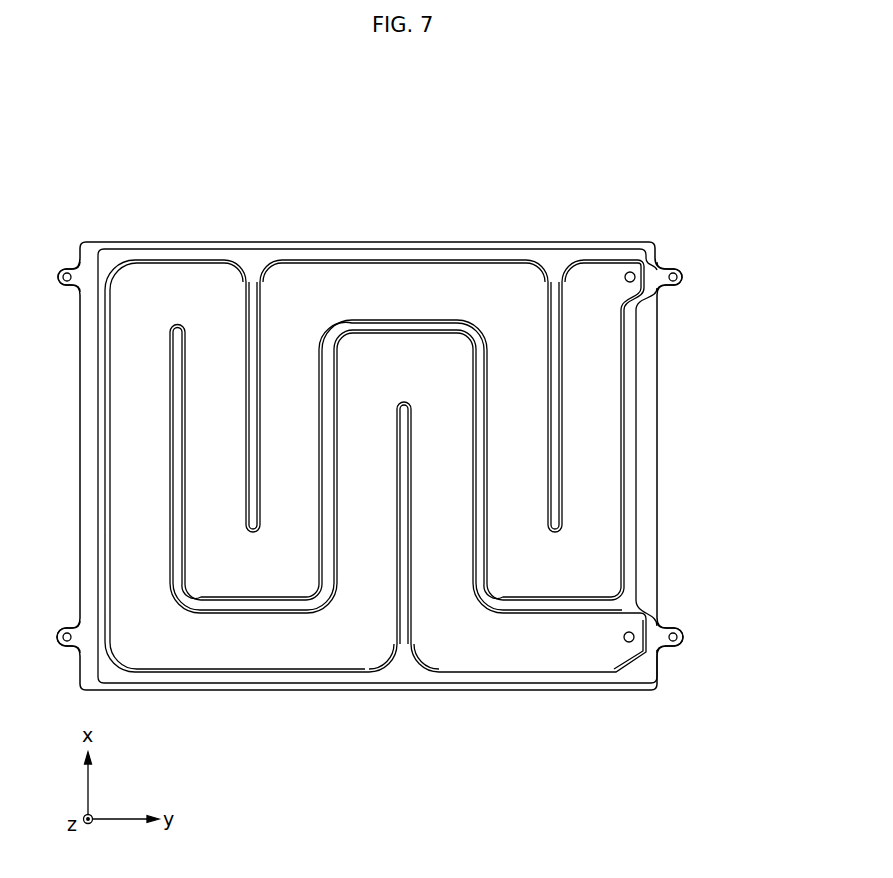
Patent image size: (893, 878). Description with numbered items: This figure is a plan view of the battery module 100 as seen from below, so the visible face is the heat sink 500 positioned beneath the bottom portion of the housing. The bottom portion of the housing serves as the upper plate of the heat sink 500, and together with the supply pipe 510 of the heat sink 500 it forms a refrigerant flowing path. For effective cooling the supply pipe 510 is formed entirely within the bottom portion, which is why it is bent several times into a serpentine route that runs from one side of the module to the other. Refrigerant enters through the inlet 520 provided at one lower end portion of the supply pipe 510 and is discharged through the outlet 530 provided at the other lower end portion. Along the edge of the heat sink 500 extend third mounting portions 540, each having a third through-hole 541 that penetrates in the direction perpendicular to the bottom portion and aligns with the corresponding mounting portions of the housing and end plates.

The battery module 100 is at (357, 108).
The heat sink 500 is at (255, 263).
The supply pipe 510 is at (392, 288).
The inlet 520 is at (630, 271).
The outlet 530 is at (623, 640).
The third mounting portion 540 is at (678, 267).
The third through-hole 541 is at (677, 281).